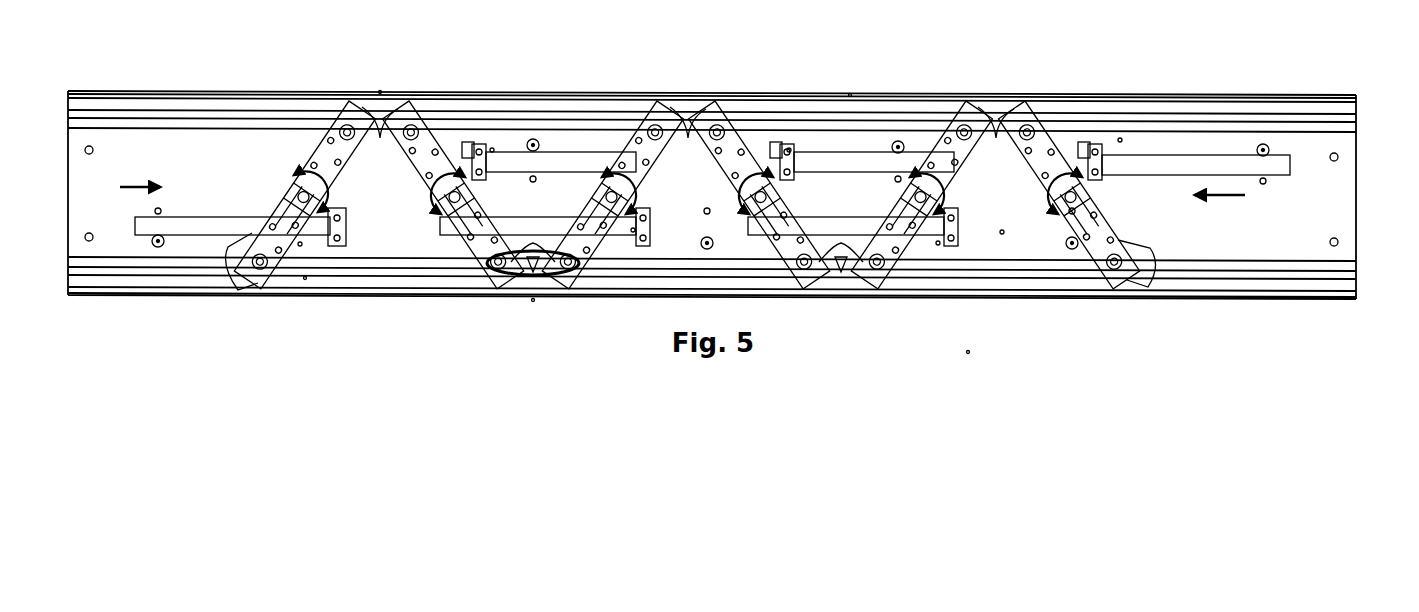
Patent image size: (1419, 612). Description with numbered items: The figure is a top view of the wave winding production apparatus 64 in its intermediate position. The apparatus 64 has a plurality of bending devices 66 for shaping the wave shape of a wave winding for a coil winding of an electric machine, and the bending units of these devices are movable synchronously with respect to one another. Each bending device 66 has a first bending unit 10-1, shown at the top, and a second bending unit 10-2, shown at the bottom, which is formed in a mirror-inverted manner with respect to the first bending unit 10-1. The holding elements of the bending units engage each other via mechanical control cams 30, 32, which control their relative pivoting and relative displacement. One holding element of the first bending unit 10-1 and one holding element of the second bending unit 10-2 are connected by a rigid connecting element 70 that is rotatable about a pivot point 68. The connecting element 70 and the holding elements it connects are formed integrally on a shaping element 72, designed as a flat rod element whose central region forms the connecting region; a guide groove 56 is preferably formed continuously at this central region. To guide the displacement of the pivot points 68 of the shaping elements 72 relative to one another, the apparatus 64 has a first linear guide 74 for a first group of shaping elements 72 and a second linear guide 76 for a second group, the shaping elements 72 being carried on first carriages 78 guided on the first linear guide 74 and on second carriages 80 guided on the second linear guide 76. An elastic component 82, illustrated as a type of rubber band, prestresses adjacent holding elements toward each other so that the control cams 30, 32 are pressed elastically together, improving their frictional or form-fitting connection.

The first bending unit 10-1 is at (380, 90).
The second bending unit 10-2 is at (533, 306).
The control cam 30 is at (338, 112).
The control cam 32 is at (412, 112).
The guide groove 56 is at (490, 150).
The wave winding production apparatus 64 is at (970, 355).
The bending device 66 is at (406, 270).
The pivot point 68 is at (293, 193).
The connecting element 70 is at (322, 195).
The shaping element 72 is at (282, 196).
The first linear guide 74 is at (1170, 167).
The second linear guide 76 is at (1002, 232).
The first carriage 78 is at (465, 157).
The second carriage 80 is at (300, 245).
The elastic component 82 is at (522, 282).